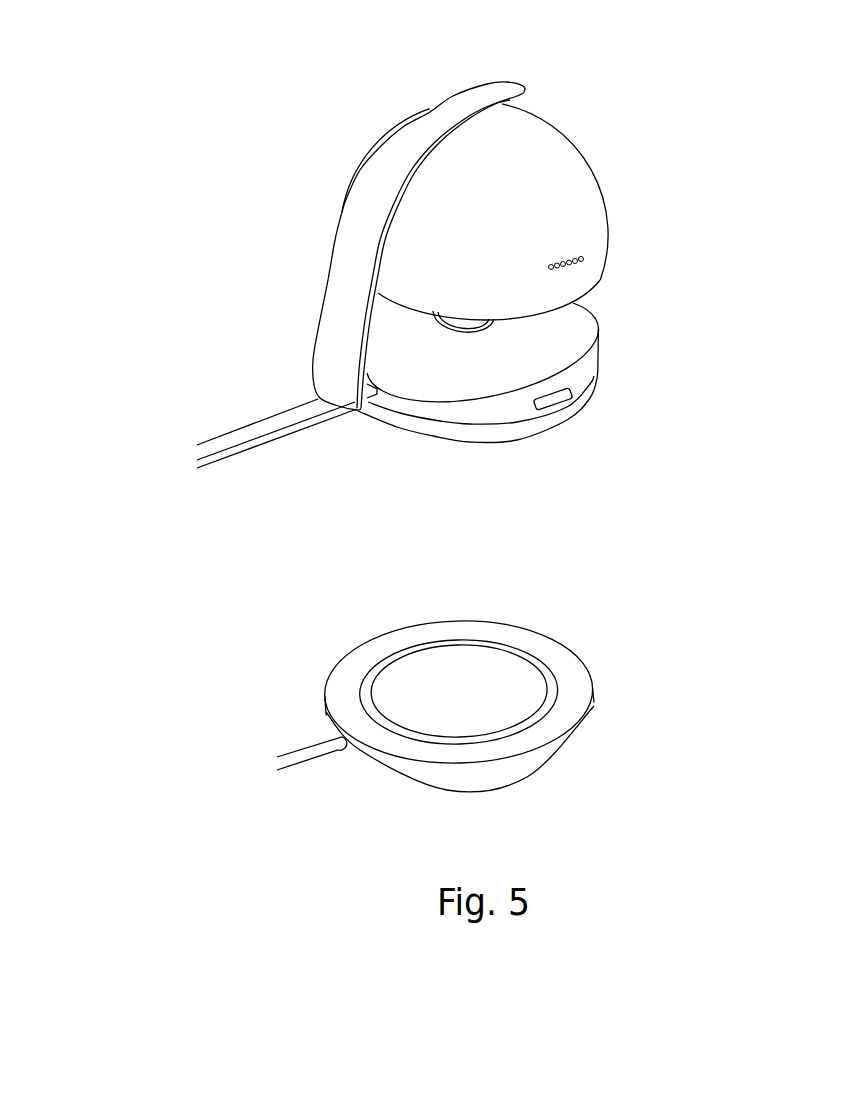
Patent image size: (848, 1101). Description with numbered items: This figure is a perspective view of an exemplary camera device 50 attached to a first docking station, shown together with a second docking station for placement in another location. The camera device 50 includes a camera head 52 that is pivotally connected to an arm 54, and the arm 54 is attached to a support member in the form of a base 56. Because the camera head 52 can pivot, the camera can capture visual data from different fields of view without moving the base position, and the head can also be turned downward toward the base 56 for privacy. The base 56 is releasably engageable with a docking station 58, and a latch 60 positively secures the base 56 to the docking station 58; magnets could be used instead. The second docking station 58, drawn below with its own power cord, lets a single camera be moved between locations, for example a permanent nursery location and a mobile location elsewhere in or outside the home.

The camera device 50 is at (468, 427).
The camera head 52 is at (595, 230).
The arm 54 is at (348, 245).
The base 56 is at (553, 378).
The docking station 58 is at (513, 430).
The latch 60 is at (557, 400).